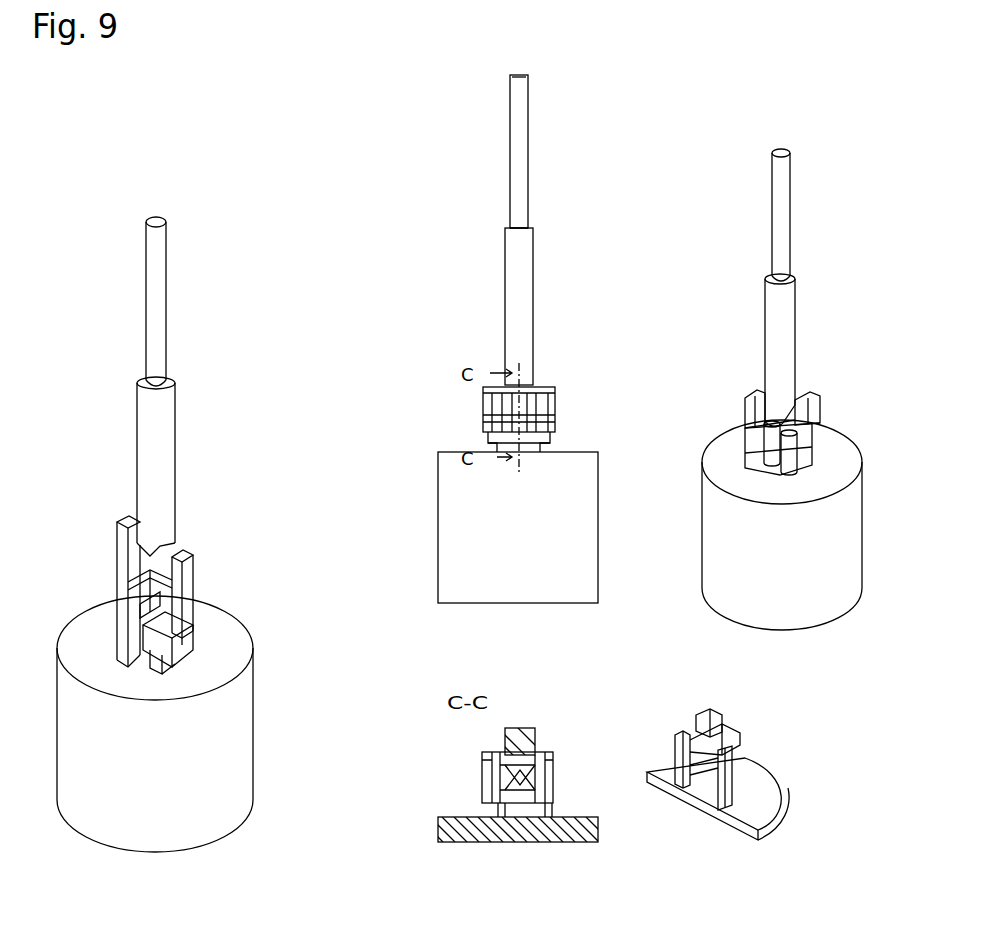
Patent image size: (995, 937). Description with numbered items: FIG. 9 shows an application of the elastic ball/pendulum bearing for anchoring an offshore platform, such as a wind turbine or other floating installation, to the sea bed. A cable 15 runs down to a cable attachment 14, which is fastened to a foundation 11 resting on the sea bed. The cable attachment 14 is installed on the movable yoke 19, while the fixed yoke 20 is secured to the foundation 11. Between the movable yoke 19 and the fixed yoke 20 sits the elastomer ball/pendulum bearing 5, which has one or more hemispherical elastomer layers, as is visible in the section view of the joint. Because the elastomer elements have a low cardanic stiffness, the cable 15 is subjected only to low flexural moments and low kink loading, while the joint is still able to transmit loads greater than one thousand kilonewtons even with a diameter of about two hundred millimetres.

The elastomer ball/pendulum bearing 5 is at (543, 770).
The foundation 11 is at (452, 503).
The cable attachment 14 is at (522, 332).
The cable 15 is at (510, 172).
The movable yoke 19 is at (778, 420).
The fixed yoke 20 is at (787, 460).